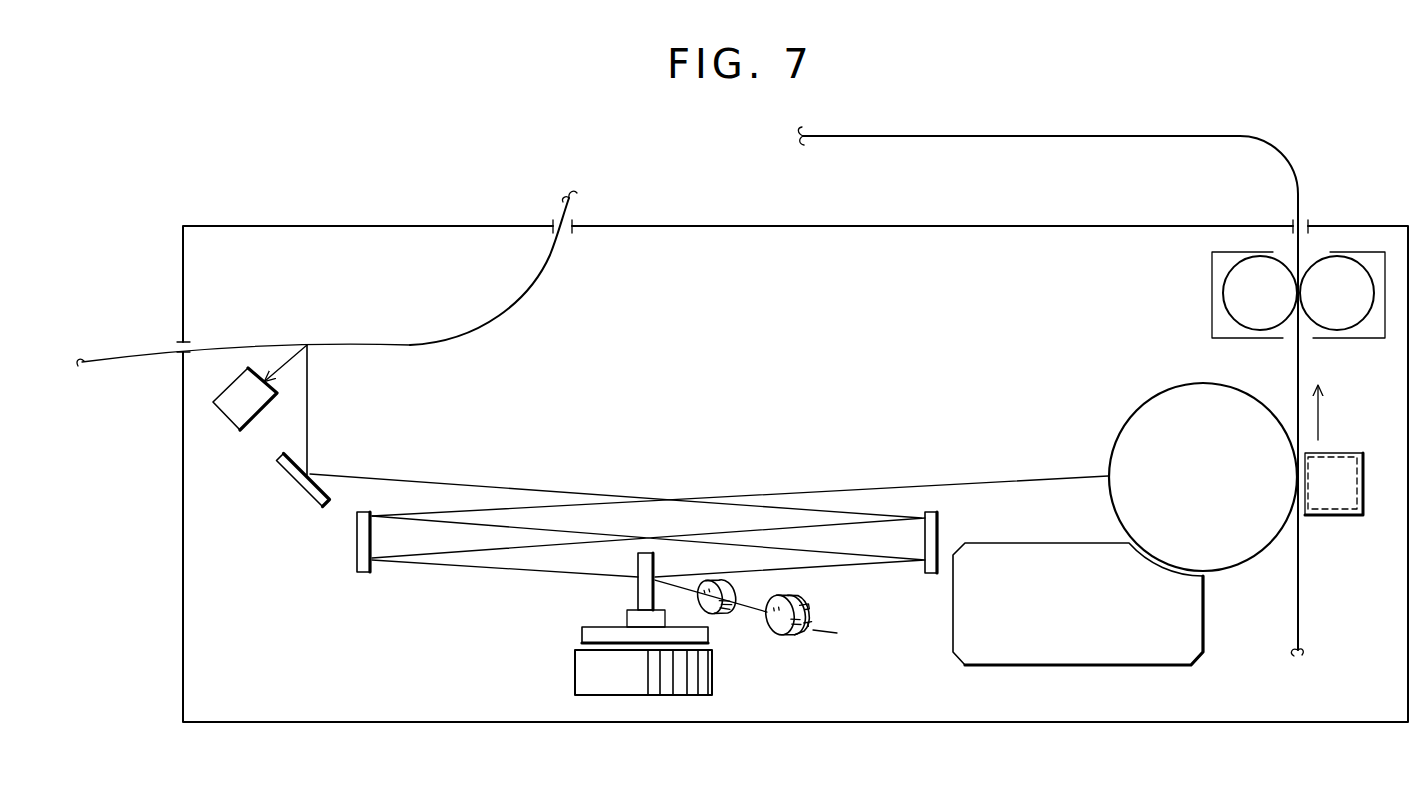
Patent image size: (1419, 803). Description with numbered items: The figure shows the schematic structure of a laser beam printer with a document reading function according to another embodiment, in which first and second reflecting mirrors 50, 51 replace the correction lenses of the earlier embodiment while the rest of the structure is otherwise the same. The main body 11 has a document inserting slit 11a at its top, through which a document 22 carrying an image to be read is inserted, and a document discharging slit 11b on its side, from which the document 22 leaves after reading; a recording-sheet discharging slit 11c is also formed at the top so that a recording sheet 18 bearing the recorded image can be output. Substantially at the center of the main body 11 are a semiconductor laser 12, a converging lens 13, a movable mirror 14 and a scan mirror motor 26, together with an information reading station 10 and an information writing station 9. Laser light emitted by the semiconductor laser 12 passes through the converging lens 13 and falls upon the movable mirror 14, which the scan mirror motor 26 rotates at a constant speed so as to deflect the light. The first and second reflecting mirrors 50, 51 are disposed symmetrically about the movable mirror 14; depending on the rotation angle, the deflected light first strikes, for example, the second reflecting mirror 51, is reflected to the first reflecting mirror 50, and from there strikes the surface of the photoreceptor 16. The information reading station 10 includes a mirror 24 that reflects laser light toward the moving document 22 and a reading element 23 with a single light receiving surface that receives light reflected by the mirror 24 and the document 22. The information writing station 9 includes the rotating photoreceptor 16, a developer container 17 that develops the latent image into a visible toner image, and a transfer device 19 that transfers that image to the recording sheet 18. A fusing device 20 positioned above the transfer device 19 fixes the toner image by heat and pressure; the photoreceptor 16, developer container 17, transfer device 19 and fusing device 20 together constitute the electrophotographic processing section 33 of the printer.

The information writing station 9 is at (1065, 425).
The information reading station 10 is at (318, 425).
The main body 11 is at (703, 226).
The document inserting slit 11a is at (572, 222).
The document discharging slit 11b is at (183, 353).
The recording-sheet discharging slit 11c is at (1310, 226).
The semiconductor laser 12 is at (785, 640).
The converging lens 13 is at (723, 627).
The movable mirror 14 is at (635, 598).
The photoreceptor 16 is at (1155, 412).
The developer container 17 is at (1186, 652).
The recording sheet 18 is at (1290, 165).
The transfer device 19 is at (1366, 488).
The fusing device 20 is at (1385, 310).
The document 22 is at (546, 276).
The reading element 23 is at (228, 402).
The mirror 24 is at (298, 482).
The scan mirror motor 26 is at (575, 672).
The electrophotographic processing section 33 is at (1290, 655).
The first reflecting mirror 50 is at (345, 576).
The second reflecting mirror 51 is at (925, 576).